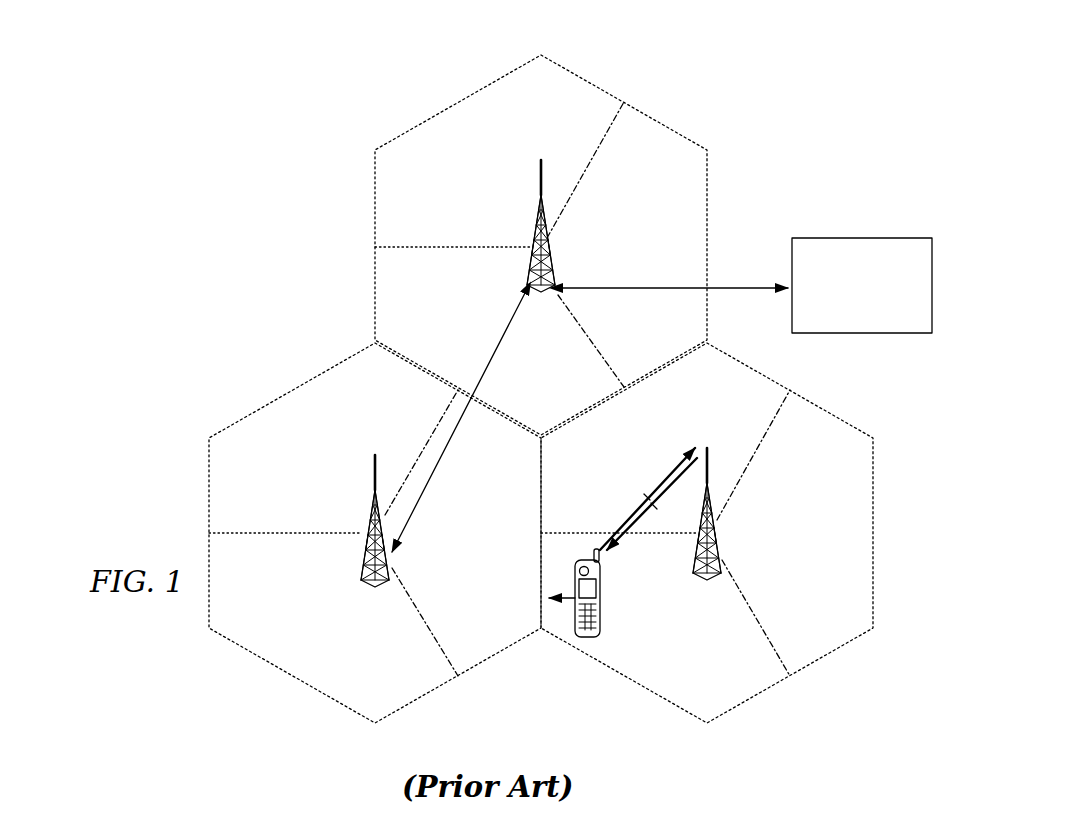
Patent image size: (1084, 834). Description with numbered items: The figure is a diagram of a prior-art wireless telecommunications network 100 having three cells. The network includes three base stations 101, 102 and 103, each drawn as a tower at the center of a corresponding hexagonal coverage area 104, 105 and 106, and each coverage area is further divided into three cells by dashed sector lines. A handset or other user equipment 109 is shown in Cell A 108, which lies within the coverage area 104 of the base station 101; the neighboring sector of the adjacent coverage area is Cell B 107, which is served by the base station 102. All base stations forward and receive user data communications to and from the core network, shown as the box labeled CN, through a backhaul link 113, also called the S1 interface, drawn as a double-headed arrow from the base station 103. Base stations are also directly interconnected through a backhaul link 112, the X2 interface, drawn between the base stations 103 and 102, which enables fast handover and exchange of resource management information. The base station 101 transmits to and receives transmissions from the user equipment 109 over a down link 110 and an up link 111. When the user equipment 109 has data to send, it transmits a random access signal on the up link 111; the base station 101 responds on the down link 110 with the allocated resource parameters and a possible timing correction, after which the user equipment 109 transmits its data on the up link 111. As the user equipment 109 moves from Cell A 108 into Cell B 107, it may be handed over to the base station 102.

The wireless telecommunications network 100 is at (668, 76).
The base station 101 is at (719, 546).
The base station 102 is at (371, 503).
The base station 103 is at (537, 216).
The coverage area 104 is at (800, 670).
The coverage area 105 is at (283, 670).
The coverage area 106 is at (707, 227).
The Cell B 107 is at (501, 627).
The Cell A 108 is at (713, 686).
The user equipment 109 is at (601, 604).
The down link 110 is at (634, 535).
The up link 111 is at (655, 483).
The backhaul link 112 is at (497, 335).
The backhaul link 113 is at (650, 287).